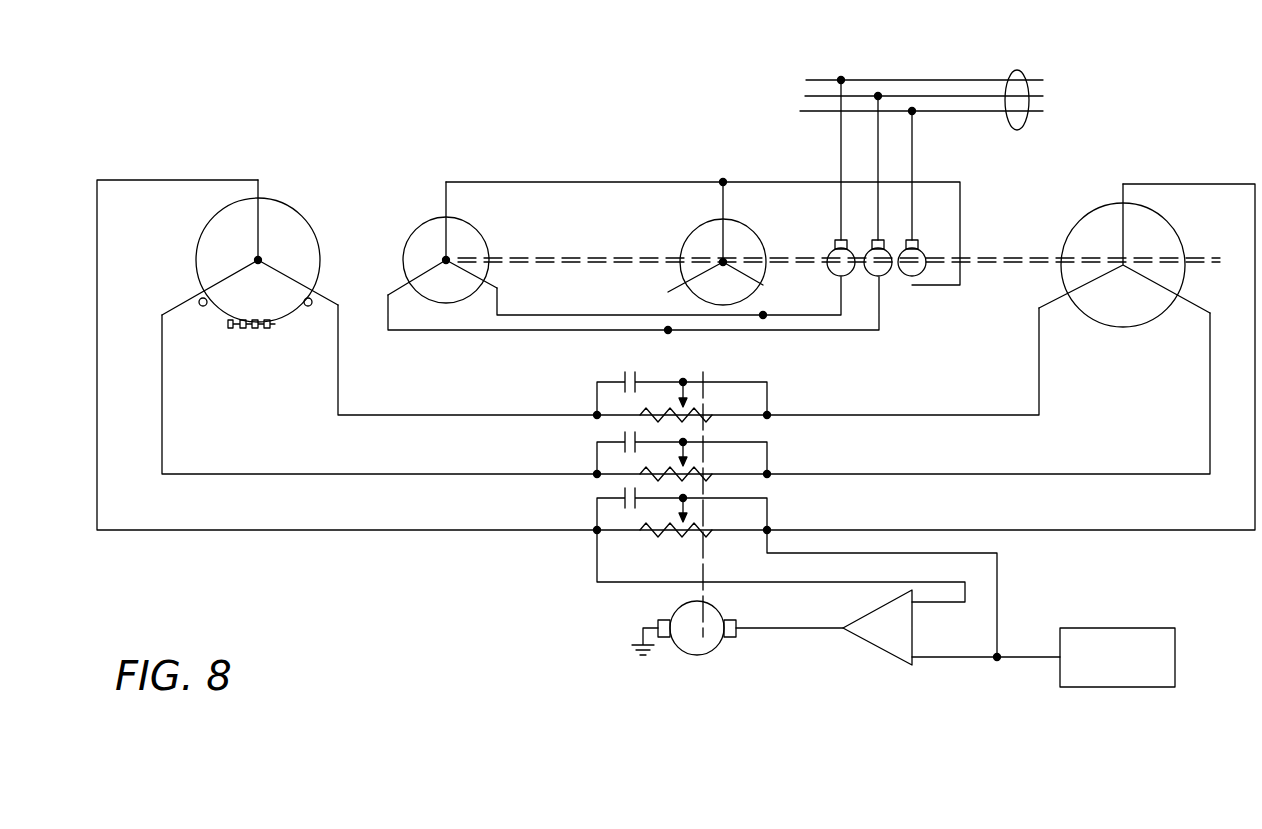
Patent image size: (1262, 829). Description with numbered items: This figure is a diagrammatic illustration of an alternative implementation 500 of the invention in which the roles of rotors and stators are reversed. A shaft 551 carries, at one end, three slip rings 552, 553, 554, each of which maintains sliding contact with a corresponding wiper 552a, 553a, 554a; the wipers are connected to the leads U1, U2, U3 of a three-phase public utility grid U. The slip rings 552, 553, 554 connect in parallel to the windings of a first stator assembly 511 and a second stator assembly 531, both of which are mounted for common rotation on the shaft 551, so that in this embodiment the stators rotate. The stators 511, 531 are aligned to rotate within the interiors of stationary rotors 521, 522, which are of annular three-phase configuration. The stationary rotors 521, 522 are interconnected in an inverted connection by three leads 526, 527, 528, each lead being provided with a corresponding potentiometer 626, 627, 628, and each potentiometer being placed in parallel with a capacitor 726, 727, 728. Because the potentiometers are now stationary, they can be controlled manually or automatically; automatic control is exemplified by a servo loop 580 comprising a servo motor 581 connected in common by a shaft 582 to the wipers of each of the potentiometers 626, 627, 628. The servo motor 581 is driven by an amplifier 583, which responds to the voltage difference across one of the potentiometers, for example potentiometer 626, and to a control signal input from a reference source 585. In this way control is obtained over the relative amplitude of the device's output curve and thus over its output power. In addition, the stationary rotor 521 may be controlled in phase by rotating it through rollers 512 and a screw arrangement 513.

The alternative implementation 500 is at (928, 380).
The first stator assembly 511 is at (468, 234).
The rollers 512 is at (199, 298).
The screw arrangement 513 is at (230, 330).
The stationary rotor 521 is at (290, 218).
The stationary rotor 522 is at (1150, 322).
The lead 526 is at (242, 527).
The lead 527 is at (340, 472).
The lead 528 is at (447, 413).
The second stator assembly 531 is at (702, 228).
The shaft 551 is at (600, 258).
The slip ring 552 is at (834, 274).
The wiper 552a is at (836, 240).
The slip ring 553 is at (880, 272).
The wiper 553a is at (885, 244).
The slip ring 554 is at (914, 272).
The wiper 554a is at (918, 246).
The servo loop 580 is at (834, 634).
The servo motor 581 is at (712, 654).
The shaft 582 is at (704, 568).
The amplifier 583 is at (872, 650).
The reference source 585 is at (1186, 612).
The potentiometer 626 is at (670, 536).
The potentiometer 627 is at (714, 476).
The potentiometer 628 is at (705, 418).
The capacitor 726 is at (608, 500).
The capacitor 727 is at (608, 442).
The capacitor 728 is at (603, 378).
The three-phase public utility grid U is at (1020, 72).
The lead U1 is at (838, 136).
The lead U2 is at (880, 126).
The lead U3 is at (914, 124).